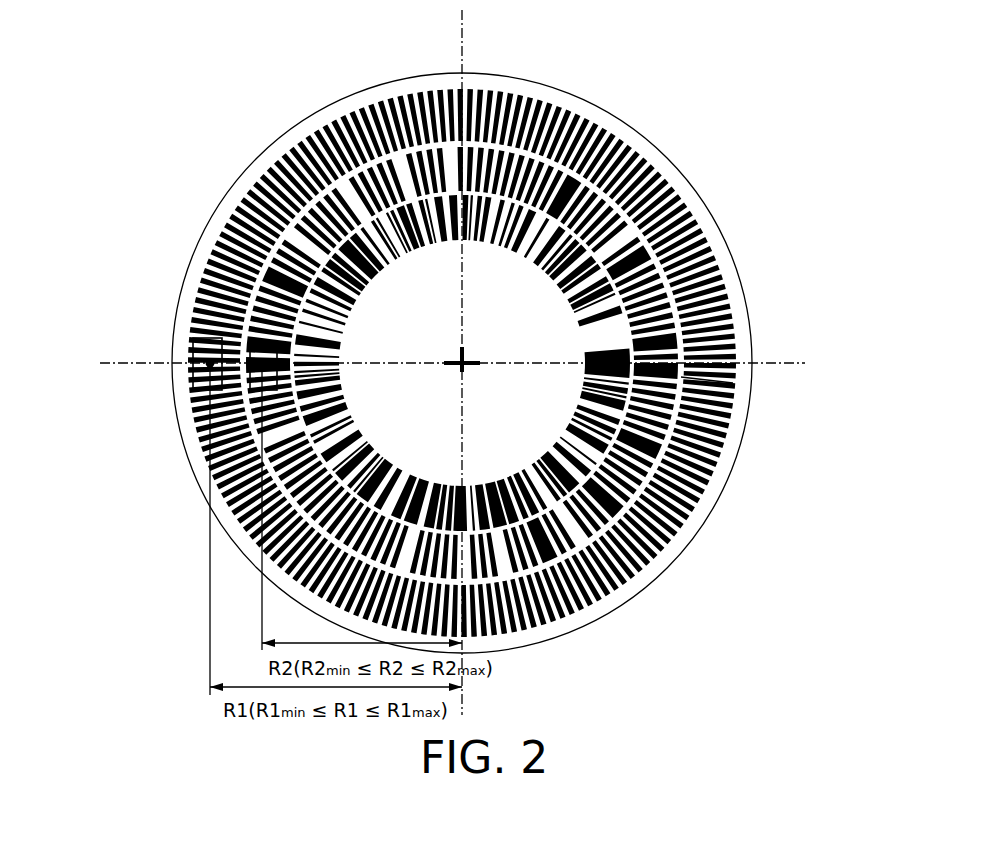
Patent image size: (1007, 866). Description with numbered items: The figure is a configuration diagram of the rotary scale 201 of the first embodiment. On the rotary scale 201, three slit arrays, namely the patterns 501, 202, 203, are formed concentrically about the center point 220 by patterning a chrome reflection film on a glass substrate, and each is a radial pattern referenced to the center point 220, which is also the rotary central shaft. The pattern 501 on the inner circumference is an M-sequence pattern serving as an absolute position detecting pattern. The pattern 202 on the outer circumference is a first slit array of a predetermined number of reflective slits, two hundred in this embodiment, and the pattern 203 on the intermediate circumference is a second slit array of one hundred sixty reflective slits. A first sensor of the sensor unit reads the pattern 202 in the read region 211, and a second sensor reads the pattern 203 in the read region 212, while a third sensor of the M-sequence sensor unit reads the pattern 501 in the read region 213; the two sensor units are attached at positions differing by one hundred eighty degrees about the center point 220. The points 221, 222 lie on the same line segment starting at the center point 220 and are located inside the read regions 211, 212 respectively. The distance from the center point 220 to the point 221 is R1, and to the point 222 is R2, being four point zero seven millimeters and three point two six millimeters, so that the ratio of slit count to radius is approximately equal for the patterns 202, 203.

The rotary scale 201 is at (600, 113).
The pattern on outer circumference (first slit array) 202 is at (707, 255).
The pattern on intermediate circumference (second slit array) 203 is at (648, 236).
The M-sequence pattern 501 is at (553, 273).
The center point 220 is at (460, 357).
The read region (first read region) 211 is at (192, 373).
The read region (second read region) 212 is at (192, 407).
The read region 213 is at (712, 382).
The point 221 is at (210, 363).
The point 222 is at (262, 363).